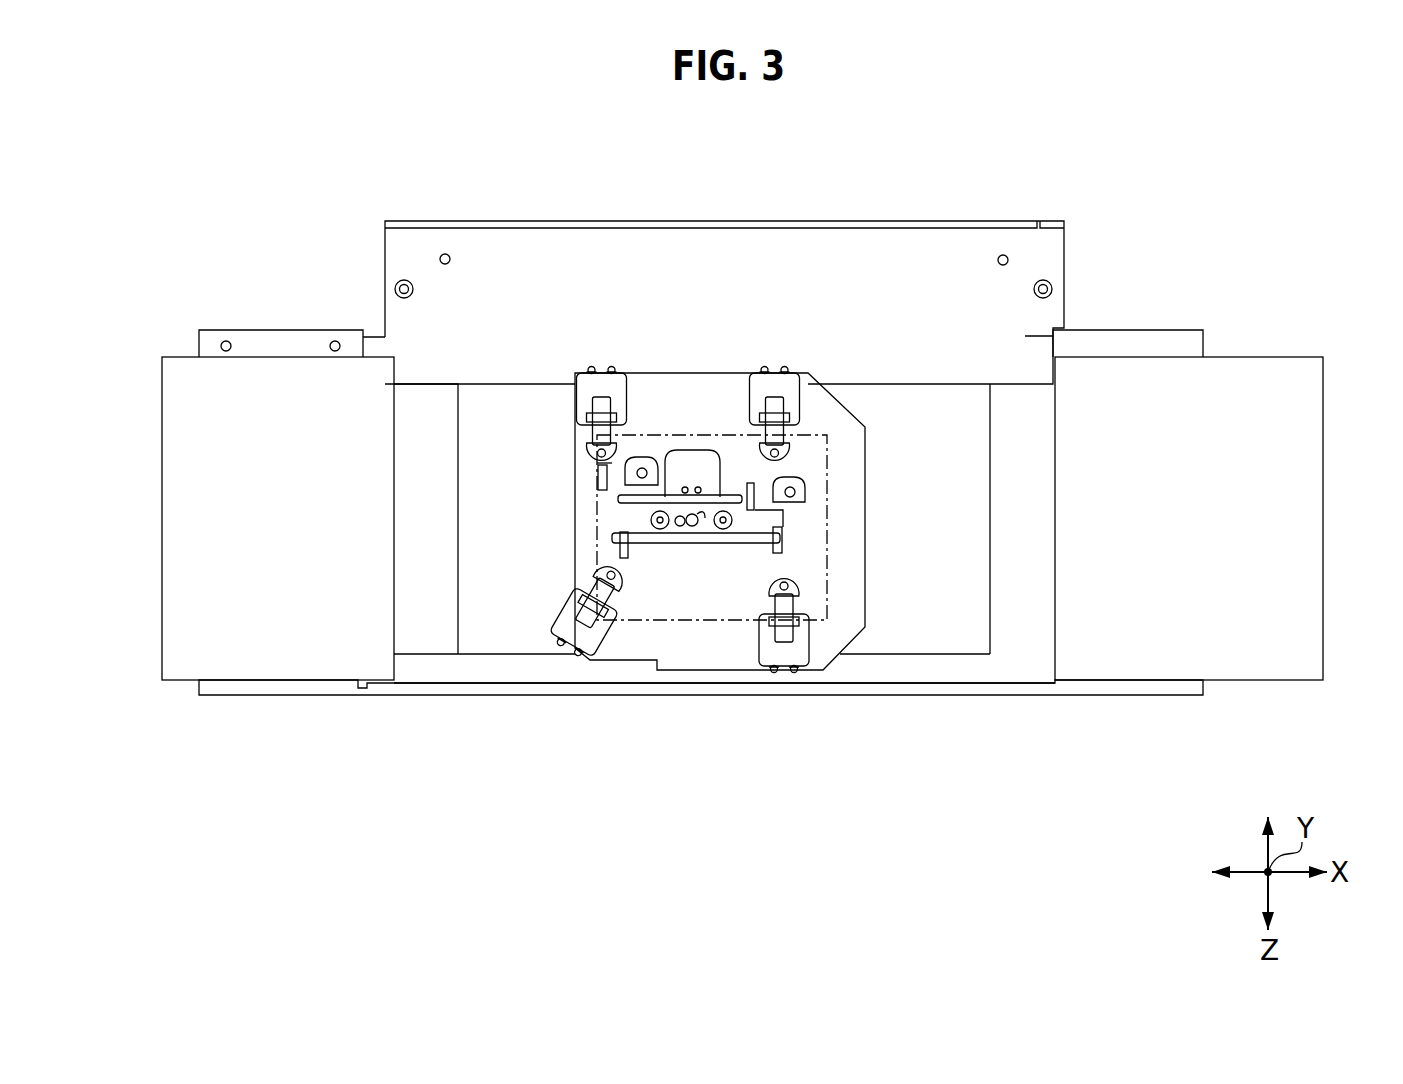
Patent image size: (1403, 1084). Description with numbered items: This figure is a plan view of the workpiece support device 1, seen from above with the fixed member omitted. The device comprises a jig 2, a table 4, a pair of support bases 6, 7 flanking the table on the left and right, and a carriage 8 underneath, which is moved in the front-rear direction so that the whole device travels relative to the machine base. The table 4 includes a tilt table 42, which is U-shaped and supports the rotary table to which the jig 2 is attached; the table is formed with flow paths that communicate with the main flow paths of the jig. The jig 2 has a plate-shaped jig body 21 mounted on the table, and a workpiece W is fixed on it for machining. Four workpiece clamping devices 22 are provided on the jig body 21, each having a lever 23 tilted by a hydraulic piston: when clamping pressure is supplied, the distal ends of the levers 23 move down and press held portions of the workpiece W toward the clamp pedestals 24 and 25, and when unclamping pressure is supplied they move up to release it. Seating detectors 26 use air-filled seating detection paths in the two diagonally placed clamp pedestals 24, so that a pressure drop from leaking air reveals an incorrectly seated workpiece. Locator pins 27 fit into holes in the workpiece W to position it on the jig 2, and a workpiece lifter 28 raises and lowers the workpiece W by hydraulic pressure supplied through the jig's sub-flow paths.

The workpiece support device 1 is at (1138, 182).
The jig 2 is at (873, 612).
The table 4 is at (724, 573).
The tilt table 42 is at (485, 657).
The support base 6 is at (182, 355).
The support base 7 is at (1252, 355).
The carriage 8 is at (980, 698).
The jig body 21 is at (868, 465).
The workpiece clamping device 22 is at (592, 387).
The lever 23 is at (612, 414).
The clamp pedestal 24 is at (719, 550).
The clamp pedestal 25 is at (701, 466).
The seating detector 26 is at (600, 573).
The locator pin 27 is at (643, 473).
The workpiece lifter 28 is at (693, 527).
The workpiece W is at (690, 615).